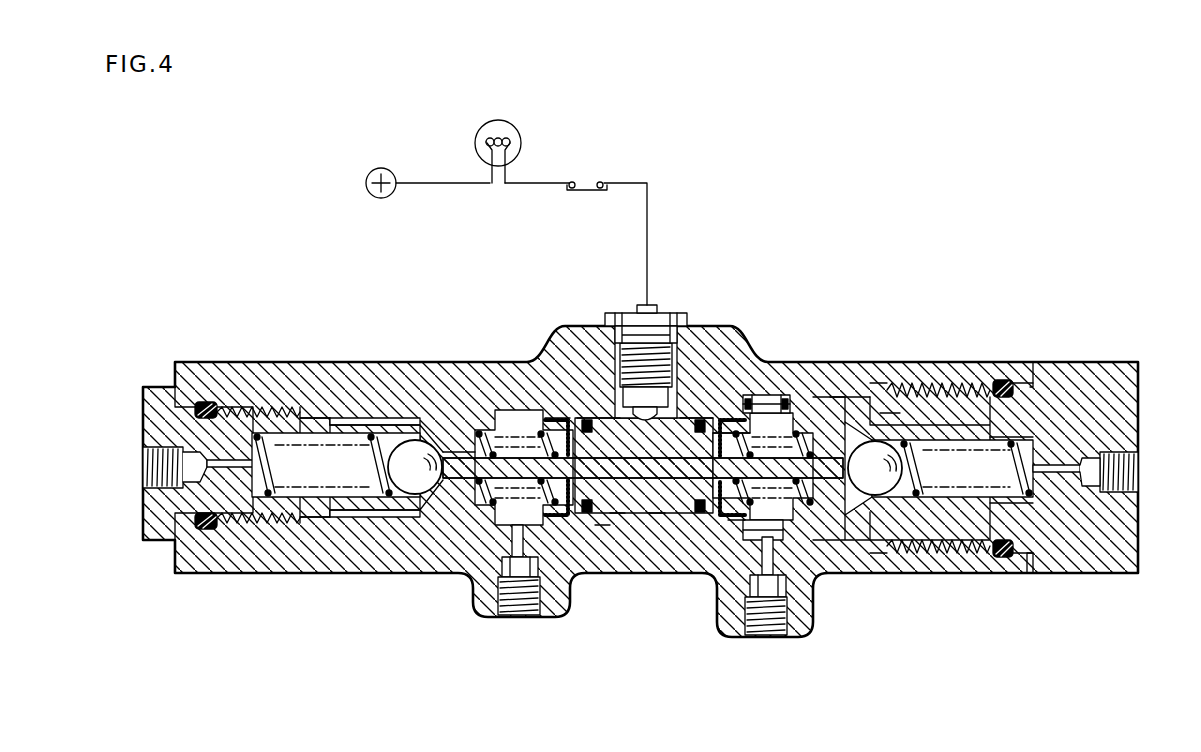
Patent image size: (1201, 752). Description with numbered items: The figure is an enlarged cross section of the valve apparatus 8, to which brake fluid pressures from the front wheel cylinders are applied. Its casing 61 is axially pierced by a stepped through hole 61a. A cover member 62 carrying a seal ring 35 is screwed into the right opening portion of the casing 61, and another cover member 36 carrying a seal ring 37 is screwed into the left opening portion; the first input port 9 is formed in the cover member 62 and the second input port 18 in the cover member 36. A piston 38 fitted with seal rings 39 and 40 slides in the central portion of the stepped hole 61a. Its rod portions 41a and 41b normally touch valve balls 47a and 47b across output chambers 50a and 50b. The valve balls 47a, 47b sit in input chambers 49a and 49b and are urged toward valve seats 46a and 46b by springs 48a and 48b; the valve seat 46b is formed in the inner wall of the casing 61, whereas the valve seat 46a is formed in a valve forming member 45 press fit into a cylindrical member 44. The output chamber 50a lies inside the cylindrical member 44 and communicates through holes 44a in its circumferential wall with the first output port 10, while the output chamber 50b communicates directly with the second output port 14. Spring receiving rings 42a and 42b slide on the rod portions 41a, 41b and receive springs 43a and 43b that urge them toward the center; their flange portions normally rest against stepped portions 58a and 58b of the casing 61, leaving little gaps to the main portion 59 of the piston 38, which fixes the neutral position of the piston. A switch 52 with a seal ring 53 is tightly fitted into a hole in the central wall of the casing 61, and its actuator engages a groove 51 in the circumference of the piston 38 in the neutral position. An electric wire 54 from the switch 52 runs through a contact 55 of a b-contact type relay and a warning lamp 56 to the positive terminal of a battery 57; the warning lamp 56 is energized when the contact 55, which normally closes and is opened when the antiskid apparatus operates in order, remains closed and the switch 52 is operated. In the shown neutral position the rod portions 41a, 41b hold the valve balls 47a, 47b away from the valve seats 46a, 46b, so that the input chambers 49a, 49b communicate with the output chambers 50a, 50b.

The valve apparatus 8 is at (796, 312).
The first input port 9 is at (1130, 478).
The first output port 10 is at (773, 633).
The second output port 14 is at (530, 600).
The second input port 18 is at (165, 485).
The seal ring 35 is at (1002, 385).
The cover member 36 is at (165, 423).
The seal ring 37 is at (202, 402).
The piston 38 is at (615, 520).
The seal ring 39 is at (598, 418).
The seal ring 40 is at (706, 418).
The rod portion 41a is at (838, 533).
The rod portion 41b is at (457, 480).
The spring receiving ring 42a is at (728, 413).
The spring receiving ring 42b is at (572, 415).
The spring 43a is at (757, 433).
The spring 43b is at (445, 435).
The cylindrical member 44 is at (848, 527).
The holes 44a is at (737, 520).
The valve forming member 45 is at (838, 400).
The valve seat 46a is at (897, 508).
The valve seat 46b is at (405, 480).
The valve ball 47a is at (885, 445).
The valve ball 47b is at (418, 500).
The spring 48a is at (1018, 500).
The spring 48b is at (275, 517).
The input chamber 49a is at (940, 430).
The input chamber 49b is at (355, 430).
The output chamber 50a is at (800, 425).
The output chamber 50b is at (515, 425).
The groove 51 is at (644, 465).
The switch 52 is at (652, 360).
The seal ring 53 is at (637, 380).
The electric wire 54 is at (652, 218).
The contact 55 is at (585, 182).
The warning lamp 56 is at (478, 132).
The battery 57 is at (381, 168).
The stepped portion 58a is at (697, 520).
The stepped portion 58b is at (540, 418).
The main portion 59 is at (600, 525).
The casing 61 is at (893, 410).
The stepped through hole 61a is at (655, 515).
The cover member 62 is at (1095, 400).